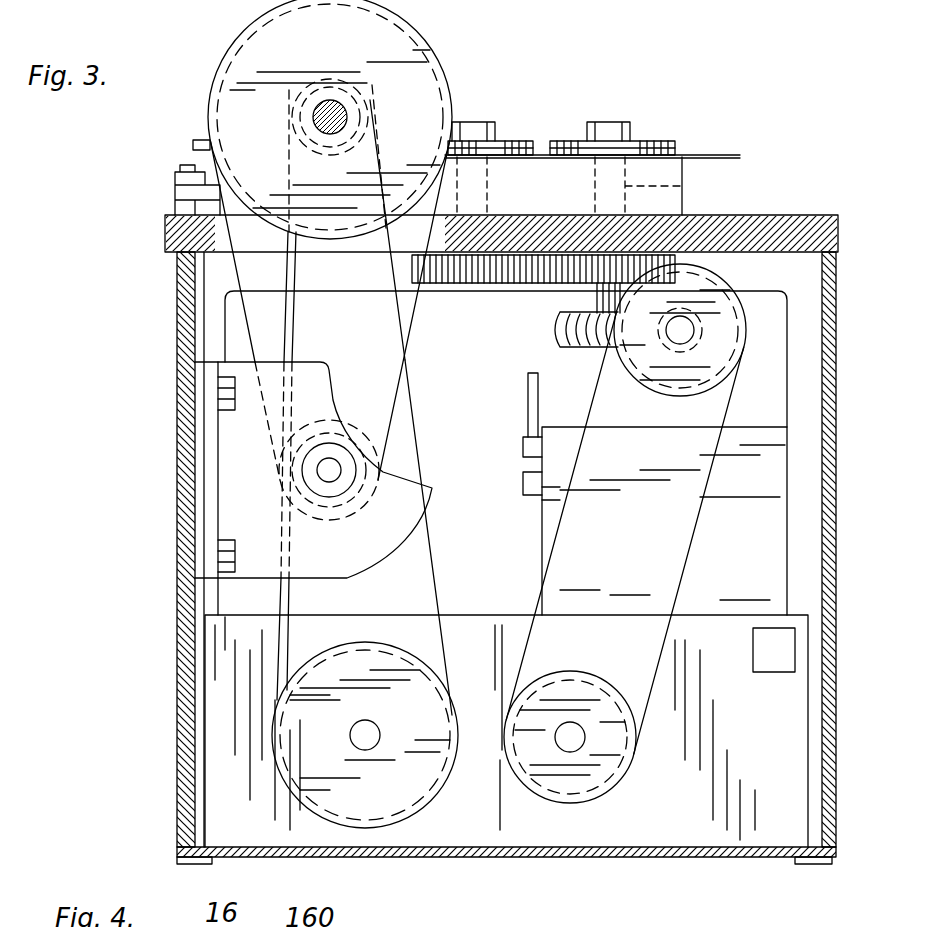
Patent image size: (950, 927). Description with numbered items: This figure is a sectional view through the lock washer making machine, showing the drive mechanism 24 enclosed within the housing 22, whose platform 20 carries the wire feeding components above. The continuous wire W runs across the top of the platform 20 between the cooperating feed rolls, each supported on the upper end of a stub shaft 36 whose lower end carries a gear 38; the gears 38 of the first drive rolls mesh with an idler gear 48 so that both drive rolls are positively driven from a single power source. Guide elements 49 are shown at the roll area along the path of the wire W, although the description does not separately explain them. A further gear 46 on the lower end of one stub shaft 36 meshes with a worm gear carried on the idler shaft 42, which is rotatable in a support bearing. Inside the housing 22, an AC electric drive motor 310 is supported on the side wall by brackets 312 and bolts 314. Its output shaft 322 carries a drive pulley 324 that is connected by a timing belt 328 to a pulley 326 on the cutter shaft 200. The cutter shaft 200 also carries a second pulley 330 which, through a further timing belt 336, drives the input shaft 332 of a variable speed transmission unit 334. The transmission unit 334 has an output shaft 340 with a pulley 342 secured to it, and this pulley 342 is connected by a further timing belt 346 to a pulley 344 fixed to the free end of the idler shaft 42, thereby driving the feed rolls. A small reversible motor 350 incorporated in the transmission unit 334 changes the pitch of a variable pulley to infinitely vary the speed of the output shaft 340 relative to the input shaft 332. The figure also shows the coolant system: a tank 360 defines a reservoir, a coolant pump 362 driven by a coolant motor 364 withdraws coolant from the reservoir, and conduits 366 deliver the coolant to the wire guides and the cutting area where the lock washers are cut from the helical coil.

The platform 20 is at (791, 215).
The housing 22 is at (166, 697).
The drive mechanism 24 is at (788, 780).
The stub shaft 36 is at (684, 186).
The gear 38 is at (585, 276).
The idler shaft 42 is at (700, 342).
The gear 46 is at (583, 347).
The idler gear 48 is at (565, 270).
The rollers 49 is at (654, 148).
The wire W is at (712, 153).
The cutter shaft 200 is at (340, 102).
The drive motor 310 is at (355, 560).
The bracket 312 is at (218, 433).
The bolt 314 is at (218, 385).
The output shaft 322 is at (334, 481).
The drive pulley 324 is at (350, 440).
The pulley 326 is at (262, 42).
The timing belt 328 is at (237, 270).
The second pulley 330 is at (296, 113).
The input shaft 332 is at (365, 750).
The variable speed transmission unit 334 is at (455, 666).
The timing belt 336 is at (432, 548).
The output shaft 340 is at (567, 700).
The pulley 342 is at (608, 778).
The pulley 344 is at (687, 380).
The timing belt 346 is at (568, 510).
The reversible motor 350 is at (770, 668).
The tank 360 is at (790, 535).
The coolant pump 362 is at (523, 446).
The coolant motor 364 is at (523, 475).
The conduit 366 is at (523, 380).